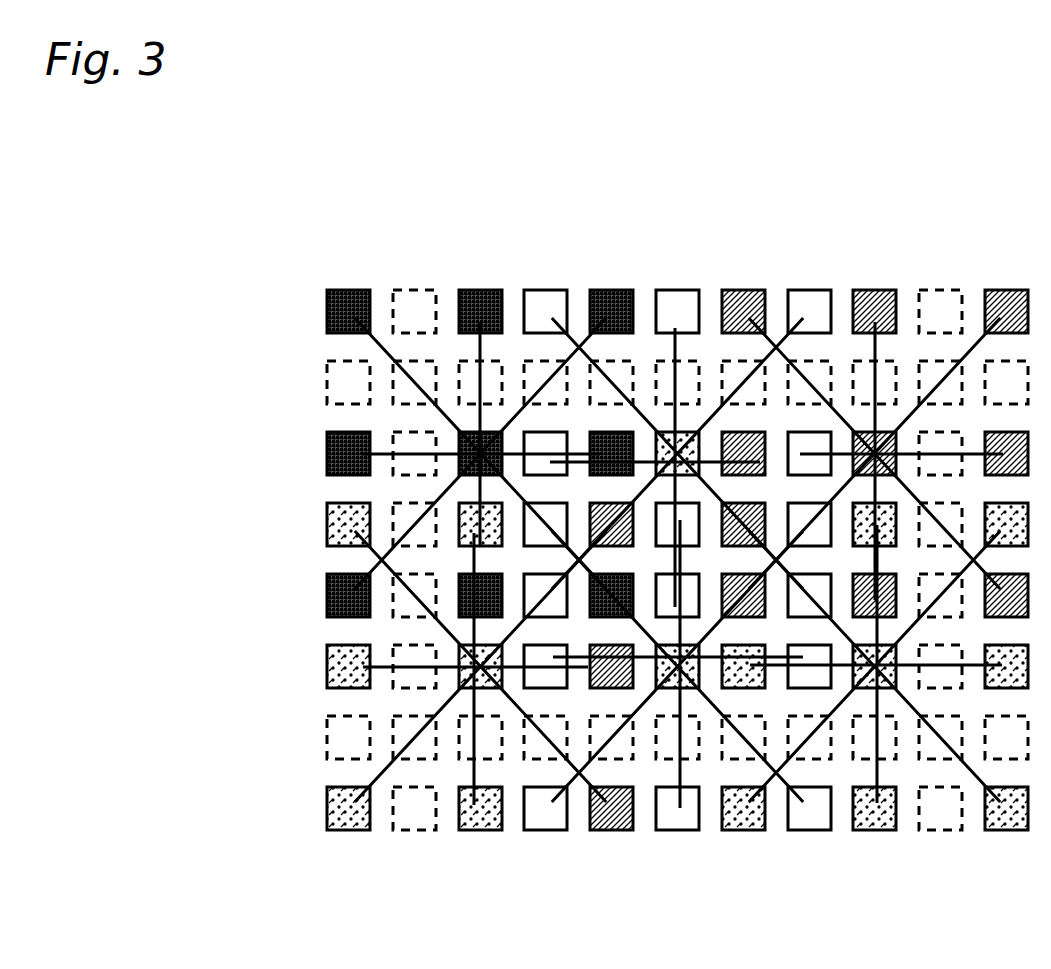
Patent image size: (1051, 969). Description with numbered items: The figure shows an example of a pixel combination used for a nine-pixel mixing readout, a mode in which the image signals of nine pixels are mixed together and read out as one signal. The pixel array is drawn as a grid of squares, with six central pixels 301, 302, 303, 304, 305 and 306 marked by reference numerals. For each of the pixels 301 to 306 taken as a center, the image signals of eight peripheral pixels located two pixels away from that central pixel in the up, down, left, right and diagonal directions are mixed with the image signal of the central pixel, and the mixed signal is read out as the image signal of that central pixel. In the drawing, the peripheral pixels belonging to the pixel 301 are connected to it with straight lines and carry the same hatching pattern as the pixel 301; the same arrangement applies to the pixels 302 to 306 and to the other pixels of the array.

The pixel 301 is at (465, 445).
The pixel 302 is at (673, 447).
The pixel 303 is at (877, 447).
The pixel 304 is at (497, 682).
The pixel 305 is at (695, 682).
The pixel 306 is at (893, 682).